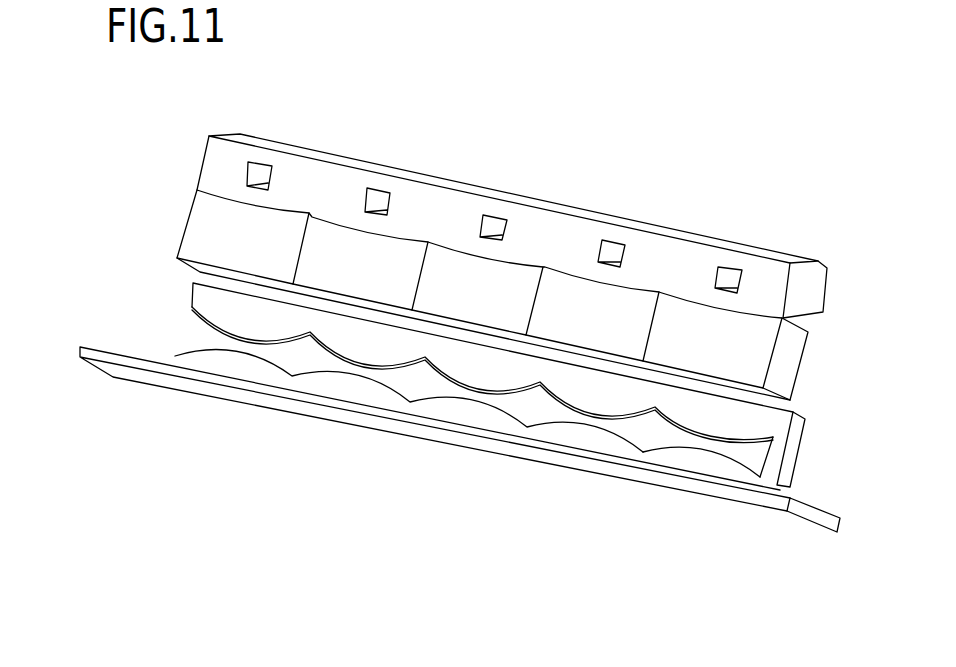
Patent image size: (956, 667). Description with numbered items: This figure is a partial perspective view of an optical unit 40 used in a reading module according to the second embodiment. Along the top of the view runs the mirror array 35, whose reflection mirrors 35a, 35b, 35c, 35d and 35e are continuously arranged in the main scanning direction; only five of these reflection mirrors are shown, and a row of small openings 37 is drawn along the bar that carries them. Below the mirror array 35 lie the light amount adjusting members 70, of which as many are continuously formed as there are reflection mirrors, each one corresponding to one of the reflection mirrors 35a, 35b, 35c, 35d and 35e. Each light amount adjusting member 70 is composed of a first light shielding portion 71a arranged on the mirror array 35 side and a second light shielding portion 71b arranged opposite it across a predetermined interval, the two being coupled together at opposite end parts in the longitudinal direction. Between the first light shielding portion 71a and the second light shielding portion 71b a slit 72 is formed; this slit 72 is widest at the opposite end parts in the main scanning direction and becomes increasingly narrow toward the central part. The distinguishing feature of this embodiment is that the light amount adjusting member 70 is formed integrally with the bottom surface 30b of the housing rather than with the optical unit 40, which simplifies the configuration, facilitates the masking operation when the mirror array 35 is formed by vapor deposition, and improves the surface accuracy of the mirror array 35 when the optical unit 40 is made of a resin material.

The optical unit 40 is at (778, 170).
The holes 37 is at (260, 172).
The mirror array 35 is at (780, 363).
The reflection mirror 35a is at (690, 353).
The reflection mirror 35b is at (570, 327).
The reflection mirror 35c is at (457, 302).
The reflection mirror 35d is at (338, 277).
The reflection mirror 35e is at (220, 250).
The slit 72 is at (566, 415).
The light amount adjusting member 70 is at (665, 565).
The first light shielding portion 71a is at (745, 430).
The second light shielding portion 71b is at (682, 462).
The bottom surface 30b is at (353, 422).